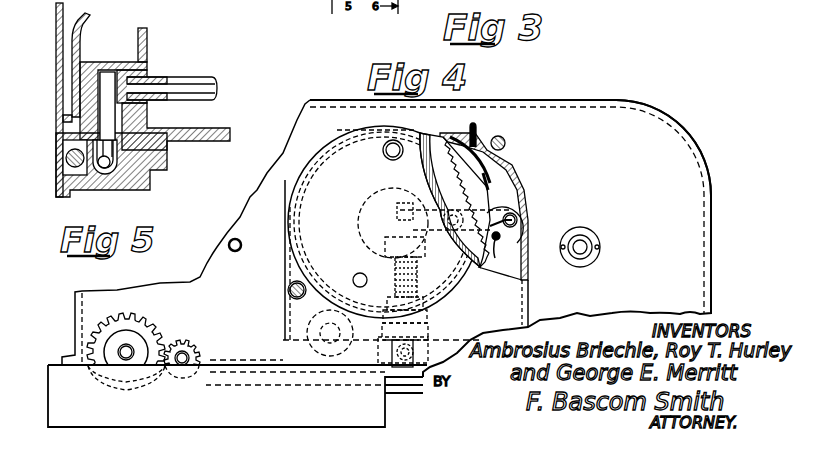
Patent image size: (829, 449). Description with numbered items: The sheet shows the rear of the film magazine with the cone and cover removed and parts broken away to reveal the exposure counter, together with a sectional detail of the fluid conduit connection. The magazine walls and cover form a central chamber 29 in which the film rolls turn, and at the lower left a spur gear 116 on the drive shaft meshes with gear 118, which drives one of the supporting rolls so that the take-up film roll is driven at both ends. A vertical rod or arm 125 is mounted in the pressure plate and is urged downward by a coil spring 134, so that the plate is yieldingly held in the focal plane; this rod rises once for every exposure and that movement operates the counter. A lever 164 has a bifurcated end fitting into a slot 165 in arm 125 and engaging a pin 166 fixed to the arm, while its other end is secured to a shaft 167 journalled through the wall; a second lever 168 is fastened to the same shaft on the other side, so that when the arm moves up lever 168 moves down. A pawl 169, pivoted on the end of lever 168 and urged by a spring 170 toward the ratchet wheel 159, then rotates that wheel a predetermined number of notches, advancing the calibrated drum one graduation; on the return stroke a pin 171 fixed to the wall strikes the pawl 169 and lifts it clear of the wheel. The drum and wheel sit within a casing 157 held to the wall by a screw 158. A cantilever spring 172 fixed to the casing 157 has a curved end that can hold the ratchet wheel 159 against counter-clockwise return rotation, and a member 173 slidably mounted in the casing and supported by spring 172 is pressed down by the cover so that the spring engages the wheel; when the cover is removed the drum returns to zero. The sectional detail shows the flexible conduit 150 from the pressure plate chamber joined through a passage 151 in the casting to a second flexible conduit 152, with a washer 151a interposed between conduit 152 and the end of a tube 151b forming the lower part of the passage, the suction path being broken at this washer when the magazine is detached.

In FIG. 4, the central chamber 29 is at (670, 147).
In FIG. 4, the spur gear 116 is at (183, 338).
In FIG. 4, the gear 118 is at (111, 323).
In FIG. 4, the vertical arm or rod 125 is at (395, 242).
In FIG. 4, the coil spring 134 is at (420, 275).
In FIG. 5, the flexible conduit 150 is at (195, 87).
In FIG. 4, the flexible conduit 150 is at (318, 326).
In FIG. 5, the passage 151 is at (105, 106).
In FIG. 5, the washer 151a is at (91, 150).
In FIG. 5, the tube 151b is at (63, 145).
In FIG. 5, the second flexible conduit 152 is at (112, 170).
In FIG. 4, the casing 157 is at (525, 195).
In FIG. 4, the screw 158 is at (289, 294).
In FIG. 4, the ratchet wheel 159 is at (485, 165).
In FIG. 4, the lever 164 is at (427, 190).
In FIG. 4, the slot 165 is at (395, 226).
In FIG. 4, the pin 166 is at (392, 209).
In FIG. 4, the shaft 167 is at (457, 208).
In FIG. 4, the second lever 168 is at (515, 210).
In FIG. 4, the pawl 169 is at (503, 235).
In FIG. 4, the spring 170 is at (517, 219).
In FIG. 4, the pin 171 is at (504, 244).
In FIG. 4, the cantilever spring 172 is at (492, 178).
In FIG. 4, the member 173 is at (498, 137).